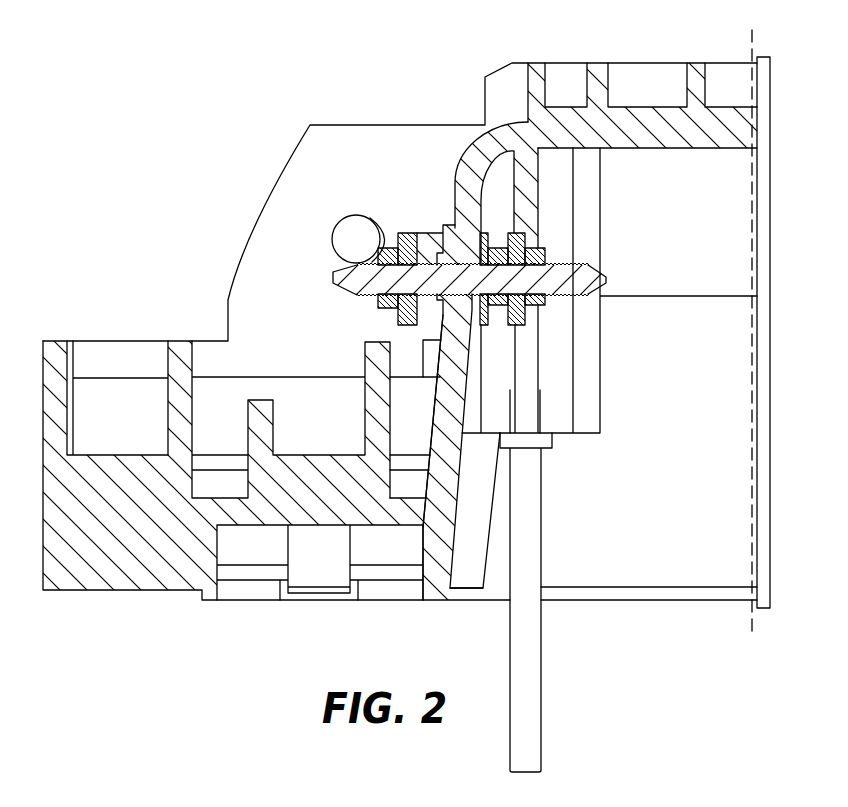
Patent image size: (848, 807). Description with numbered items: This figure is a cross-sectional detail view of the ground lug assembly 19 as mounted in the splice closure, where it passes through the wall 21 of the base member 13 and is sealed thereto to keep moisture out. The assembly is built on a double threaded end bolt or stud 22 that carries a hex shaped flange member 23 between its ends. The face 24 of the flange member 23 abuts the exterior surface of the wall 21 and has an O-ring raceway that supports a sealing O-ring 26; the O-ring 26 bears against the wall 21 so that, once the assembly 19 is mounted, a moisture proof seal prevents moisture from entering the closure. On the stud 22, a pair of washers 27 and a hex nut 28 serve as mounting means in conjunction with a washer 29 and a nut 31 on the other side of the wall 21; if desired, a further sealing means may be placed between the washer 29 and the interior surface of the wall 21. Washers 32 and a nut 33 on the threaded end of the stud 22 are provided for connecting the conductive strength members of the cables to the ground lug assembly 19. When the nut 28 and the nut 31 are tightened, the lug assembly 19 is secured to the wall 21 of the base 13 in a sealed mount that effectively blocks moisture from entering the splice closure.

The base member 13 is at (595, 63).
The ground lug assembly 19 is at (443, 196).
The wall 21 is at (432, 423).
The double threaded end bolt or stud 22 is at (355, 285).
The hex shaped flange member 23 is at (432, 243).
The face 24 is at (440, 328).
The sealing O-ring 26 is at (487, 233).
The washers 27 is at (345, 230).
The nut 28 is at (340, 256).
The washer 29 is at (488, 308).
The nut 31 is at (500, 305).
The washers 32 is at (525, 238).
The nut 33 is at (545, 255).